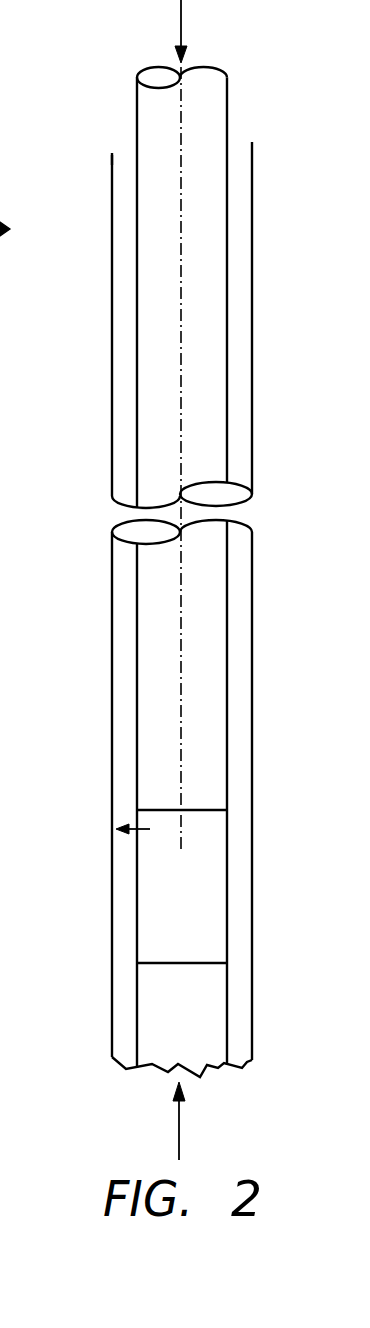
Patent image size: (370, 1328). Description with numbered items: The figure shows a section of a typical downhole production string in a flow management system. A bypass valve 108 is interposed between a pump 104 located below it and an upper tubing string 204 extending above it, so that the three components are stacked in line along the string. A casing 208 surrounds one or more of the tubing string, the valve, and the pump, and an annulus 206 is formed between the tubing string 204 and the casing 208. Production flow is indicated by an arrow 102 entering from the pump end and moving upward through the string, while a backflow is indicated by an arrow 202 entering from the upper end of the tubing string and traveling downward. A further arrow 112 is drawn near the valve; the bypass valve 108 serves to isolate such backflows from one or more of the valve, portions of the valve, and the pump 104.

The arrow indicating backflow 202 is at (183, 18).
The upper tubing string 204 is at (137, 108).
The annulus 206 is at (125, 146).
The casing 208 is at (112, 209).
The flow direction arrow 112 is at (119, 836).
The bypass valve 108 is at (158, 924).
The pump 104 is at (201, 1047).
The arrow indicating production flow 102 is at (181, 1118).